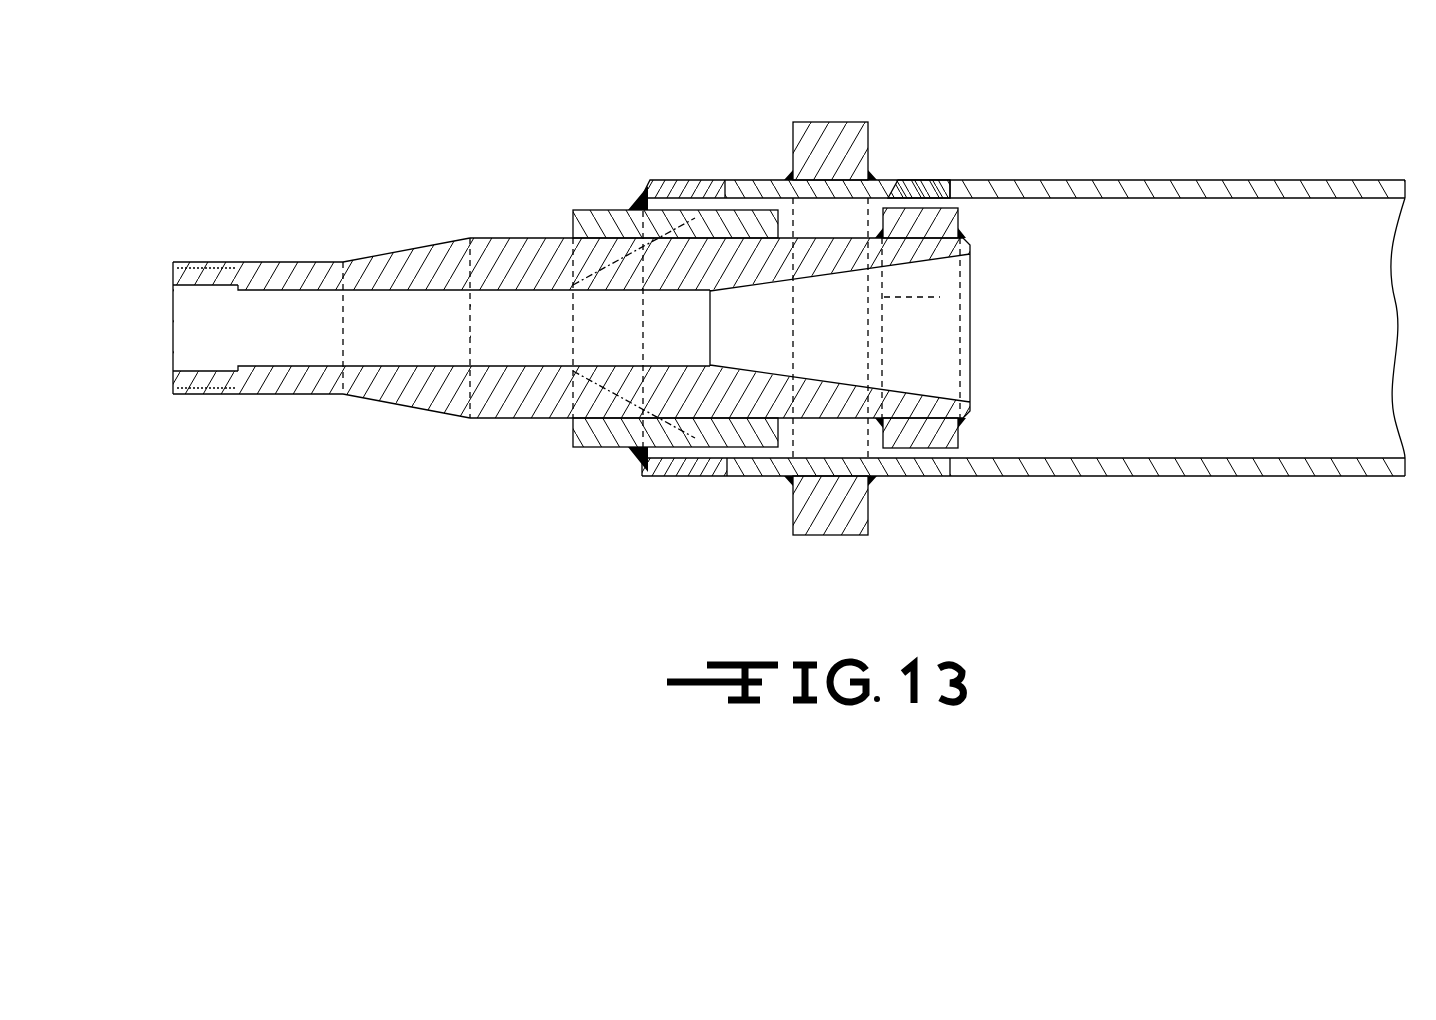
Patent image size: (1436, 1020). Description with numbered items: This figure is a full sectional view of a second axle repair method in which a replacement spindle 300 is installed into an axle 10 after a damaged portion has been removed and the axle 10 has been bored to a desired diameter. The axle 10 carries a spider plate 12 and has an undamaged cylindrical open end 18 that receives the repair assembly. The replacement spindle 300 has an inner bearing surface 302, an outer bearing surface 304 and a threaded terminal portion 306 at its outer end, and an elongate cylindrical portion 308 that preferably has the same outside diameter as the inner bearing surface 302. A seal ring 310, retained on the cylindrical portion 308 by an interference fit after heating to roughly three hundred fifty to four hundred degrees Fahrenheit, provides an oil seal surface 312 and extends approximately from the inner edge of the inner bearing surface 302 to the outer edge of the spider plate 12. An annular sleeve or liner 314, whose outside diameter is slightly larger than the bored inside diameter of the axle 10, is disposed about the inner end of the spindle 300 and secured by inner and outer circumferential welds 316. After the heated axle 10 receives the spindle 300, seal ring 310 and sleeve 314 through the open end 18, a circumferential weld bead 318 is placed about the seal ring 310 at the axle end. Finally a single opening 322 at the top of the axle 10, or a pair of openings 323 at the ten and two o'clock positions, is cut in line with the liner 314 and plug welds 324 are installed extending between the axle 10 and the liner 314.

The axle 10 is at (1128, 142).
The spider plate 12 is at (818, 143).
The undamaged cylindrical open end 18 is at (580, 180).
The replacement spindle 300 is at (425, 162).
The inner bearing surface 302 is at (498, 238).
The outer bearing surface 304 is at (277, 262).
The threaded terminal portion 306 is at (203, 261).
The elongate cylindrical portion 308 is at (840, 237).
The seal ring 310 is at (690, 223).
The oil seal surface 312 is at (591, 447).
The annular sleeve or liner 314 is at (937, 448).
The circumferential welds 316 is at (962, 428).
The circumferential weld bead 318 is at (638, 458).
The single opening 322 is at (958, 190).
The pair of openings 323 is at (928, 298).
The plug welds 324 is at (922, 192).